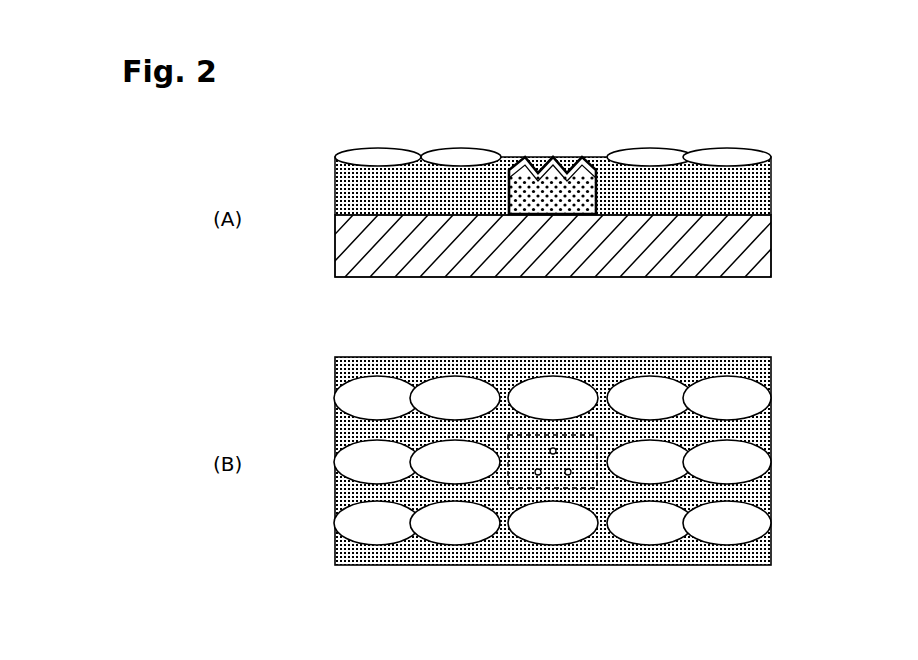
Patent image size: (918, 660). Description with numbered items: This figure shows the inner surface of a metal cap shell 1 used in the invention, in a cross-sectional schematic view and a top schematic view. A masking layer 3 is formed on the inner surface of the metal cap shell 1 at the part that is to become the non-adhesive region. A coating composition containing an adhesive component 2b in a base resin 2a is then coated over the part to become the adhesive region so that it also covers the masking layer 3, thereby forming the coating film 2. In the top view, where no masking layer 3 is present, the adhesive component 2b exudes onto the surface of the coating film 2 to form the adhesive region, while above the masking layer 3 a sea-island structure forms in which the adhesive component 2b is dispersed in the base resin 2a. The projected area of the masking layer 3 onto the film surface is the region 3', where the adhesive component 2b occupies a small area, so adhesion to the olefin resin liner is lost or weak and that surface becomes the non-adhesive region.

The metal cap shell 1 is at (757, 247).
The coating film 2 is at (772, 202).
The base resin 2a is at (760, 171).
The adhesive component 2b is at (542, 157).
The masking layer 3 is at (552, 237).
The region corresponding to the masking layer 3' is at (562, 402).